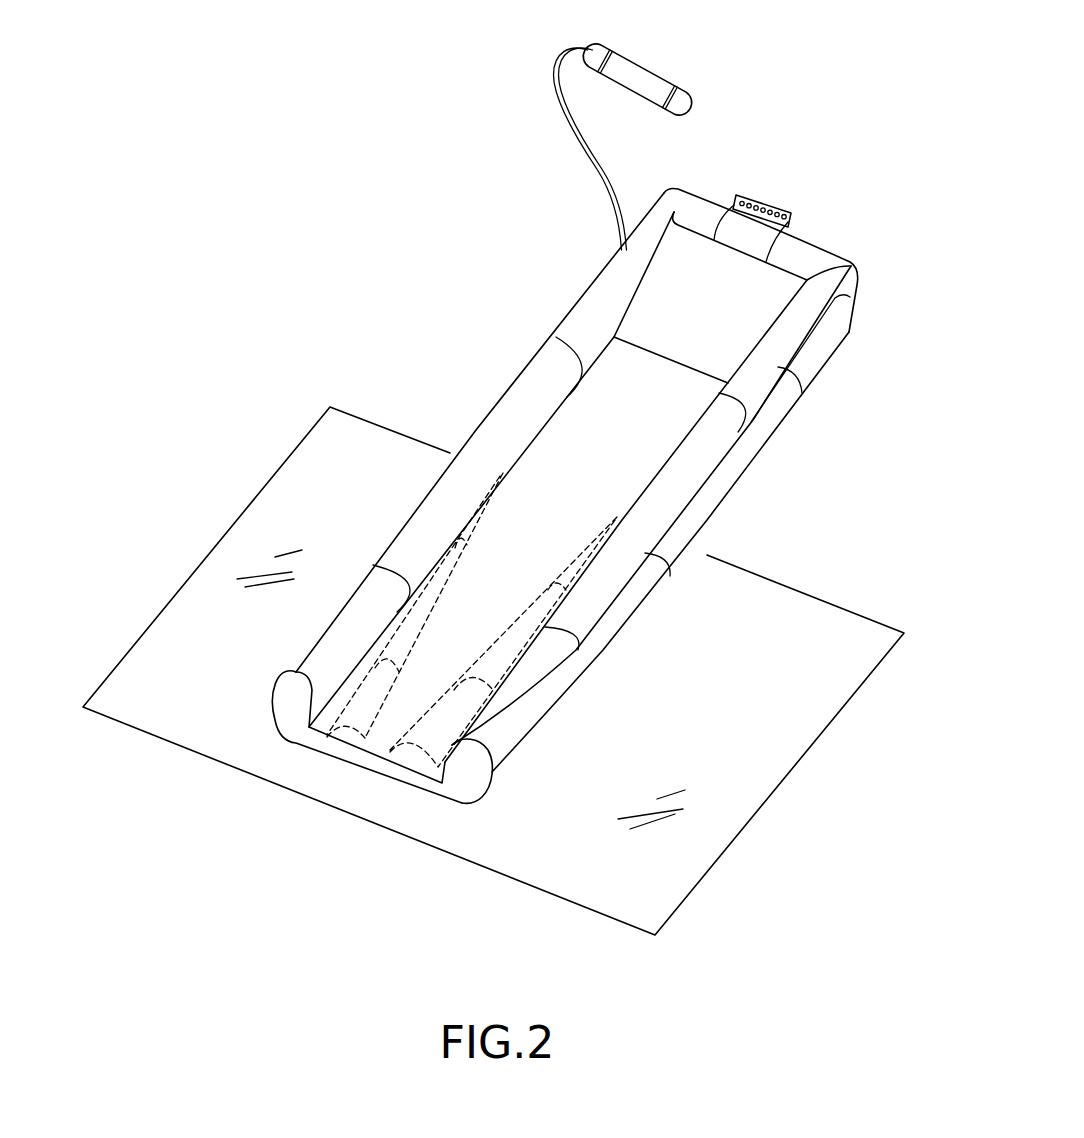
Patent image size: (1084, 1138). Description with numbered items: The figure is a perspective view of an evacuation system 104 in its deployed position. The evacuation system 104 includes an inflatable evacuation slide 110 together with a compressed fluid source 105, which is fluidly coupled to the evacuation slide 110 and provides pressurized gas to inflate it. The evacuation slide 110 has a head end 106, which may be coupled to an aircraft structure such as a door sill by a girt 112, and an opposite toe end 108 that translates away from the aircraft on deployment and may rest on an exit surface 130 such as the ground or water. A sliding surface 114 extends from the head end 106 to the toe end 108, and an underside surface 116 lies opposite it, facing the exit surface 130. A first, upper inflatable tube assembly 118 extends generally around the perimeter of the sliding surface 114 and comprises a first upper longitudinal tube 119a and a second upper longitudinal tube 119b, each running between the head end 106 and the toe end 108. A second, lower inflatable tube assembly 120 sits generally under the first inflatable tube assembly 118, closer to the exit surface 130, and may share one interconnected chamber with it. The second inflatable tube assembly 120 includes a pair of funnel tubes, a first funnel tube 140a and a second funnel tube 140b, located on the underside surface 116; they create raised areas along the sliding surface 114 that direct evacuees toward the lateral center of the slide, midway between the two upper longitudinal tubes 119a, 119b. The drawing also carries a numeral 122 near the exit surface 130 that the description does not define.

The evacuation system 104 is at (593, 443).
The compressed fluid source 105 is at (656, 73).
The head end 106 is at (720, 193).
The toe end 108 is at (363, 760).
The inflatable evacuation slide 110 is at (593, 486).
The girt 112 is at (768, 197).
The sliding surface 114 is at (525, 552).
The underside surface 116 is at (648, 534).
The first inflatable tube assembly 118 is at (485, 460).
The first upper longitudinal tube 119a is at (509, 377).
The second upper longitudinal tube 119b is at (662, 483).
The second inflatable tube assembly 120 is at (673, 546).
The support surface 122 is at (493, 671).
The exit surface 130 is at (604, 880).
The first funnel tube 140a is at (402, 628).
The second funnel tube 140b is at (503, 658).